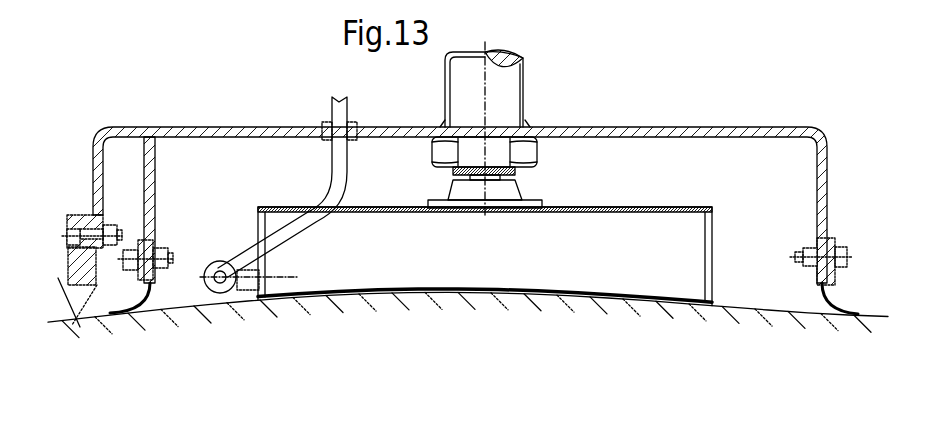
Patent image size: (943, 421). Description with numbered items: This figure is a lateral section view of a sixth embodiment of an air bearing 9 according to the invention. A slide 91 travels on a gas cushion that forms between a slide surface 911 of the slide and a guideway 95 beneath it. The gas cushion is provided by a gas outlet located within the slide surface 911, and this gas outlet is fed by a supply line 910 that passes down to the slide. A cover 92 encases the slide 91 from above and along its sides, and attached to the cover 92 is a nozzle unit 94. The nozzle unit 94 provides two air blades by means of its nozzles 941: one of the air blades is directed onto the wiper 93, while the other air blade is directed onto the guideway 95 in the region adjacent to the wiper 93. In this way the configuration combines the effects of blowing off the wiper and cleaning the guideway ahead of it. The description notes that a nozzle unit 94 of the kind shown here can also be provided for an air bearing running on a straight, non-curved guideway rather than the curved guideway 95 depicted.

The adjusting foot assembly 9 is at (128, 62).
The slide 91 is at (678, 280).
The slide surface 911 is at (372, 292).
The cover 92 is at (223, 175).
The wiper 93 is at (132, 311).
The nozzle unit 94 is at (82, 215).
The nozzles 941 is at (80, 327).
The guideway 95 is at (437, 345).
The supply line 910 is at (337, 110).